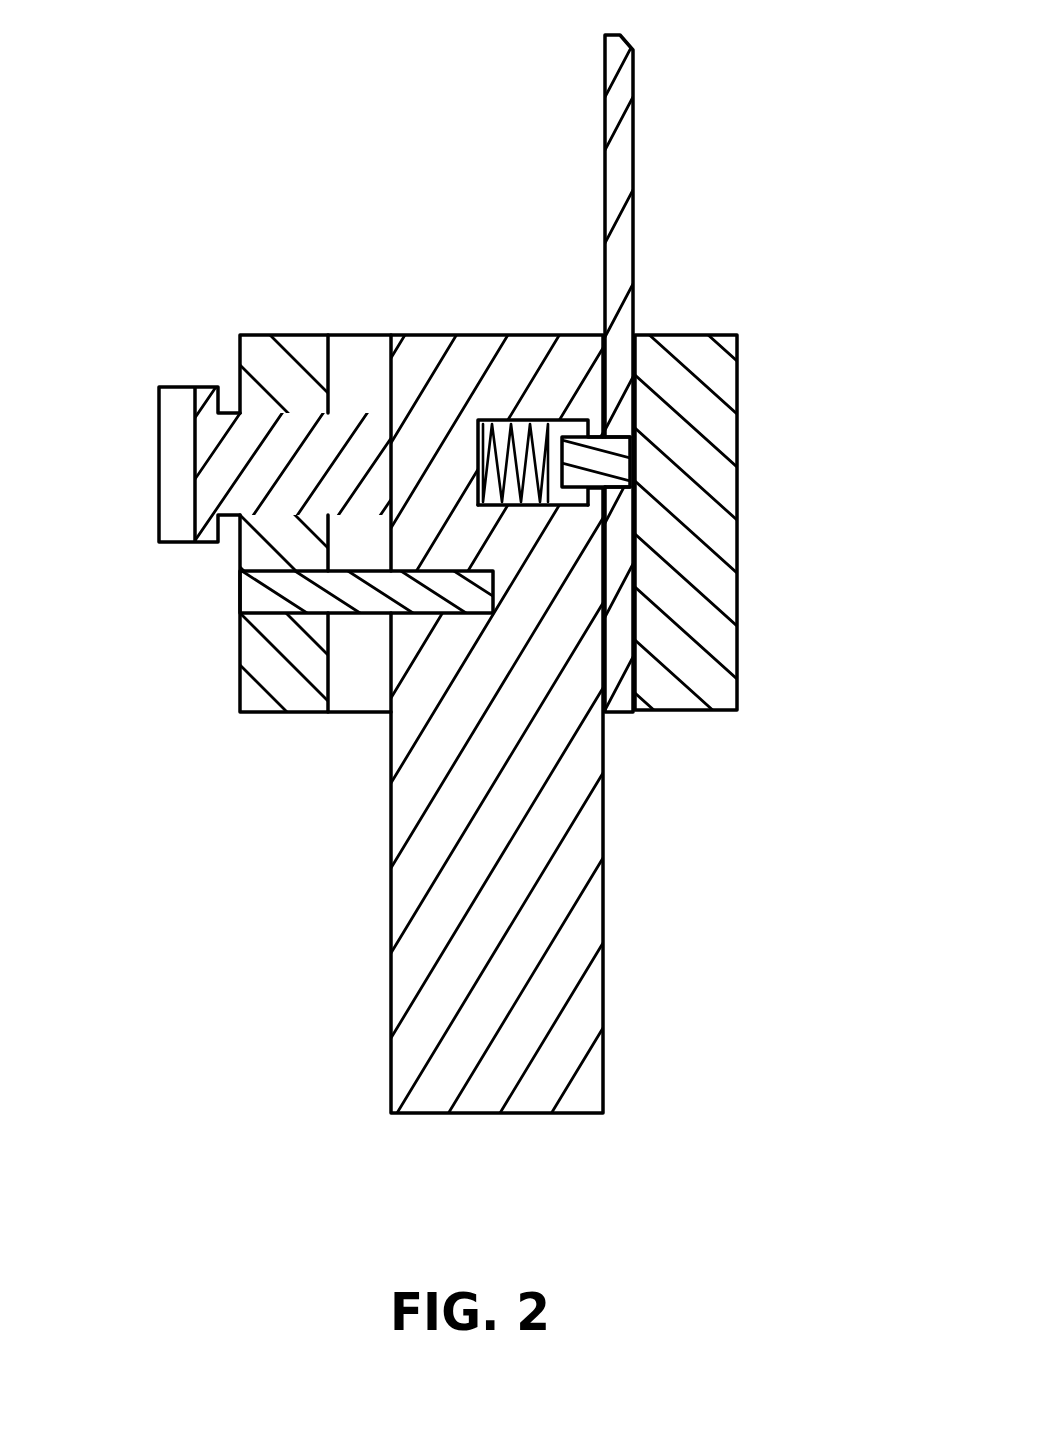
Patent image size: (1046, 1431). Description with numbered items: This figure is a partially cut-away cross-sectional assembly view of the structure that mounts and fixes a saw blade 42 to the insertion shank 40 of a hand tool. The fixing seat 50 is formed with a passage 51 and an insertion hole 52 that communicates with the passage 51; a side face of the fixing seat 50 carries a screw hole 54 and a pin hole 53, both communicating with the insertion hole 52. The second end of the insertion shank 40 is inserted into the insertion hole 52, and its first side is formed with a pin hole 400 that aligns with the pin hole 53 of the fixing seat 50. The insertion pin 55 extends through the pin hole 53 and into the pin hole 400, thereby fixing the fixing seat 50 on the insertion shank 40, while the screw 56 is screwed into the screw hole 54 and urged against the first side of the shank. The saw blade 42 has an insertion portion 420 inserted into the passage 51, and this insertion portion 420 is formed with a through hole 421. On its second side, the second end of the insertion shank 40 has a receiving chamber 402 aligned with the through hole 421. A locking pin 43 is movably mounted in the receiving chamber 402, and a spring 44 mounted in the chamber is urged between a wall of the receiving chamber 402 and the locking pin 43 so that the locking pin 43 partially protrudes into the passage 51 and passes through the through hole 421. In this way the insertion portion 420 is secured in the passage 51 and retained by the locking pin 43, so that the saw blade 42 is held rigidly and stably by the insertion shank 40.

The insertion shank 40 is at (533, 843).
The saw blade 42 is at (618, 178).
The locking pin 43 is at (605, 460).
The spring 44 is at (523, 505).
The fixing seat 50 is at (683, 538).
The passage 51 is at (626, 437).
The insertion hole 52 is at (363, 358).
The pin hole 53 is at (303, 598).
The screw hole 54 is at (267, 410).
The insertion pin 55 is at (300, 610).
The screw 56 is at (360, 443).
The pin hole 400 is at (560, 495).
The receiving chamber 402 is at (532, 502).
The insertion portion 420 is at (620, 588).
The through hole 421 is at (637, 432).